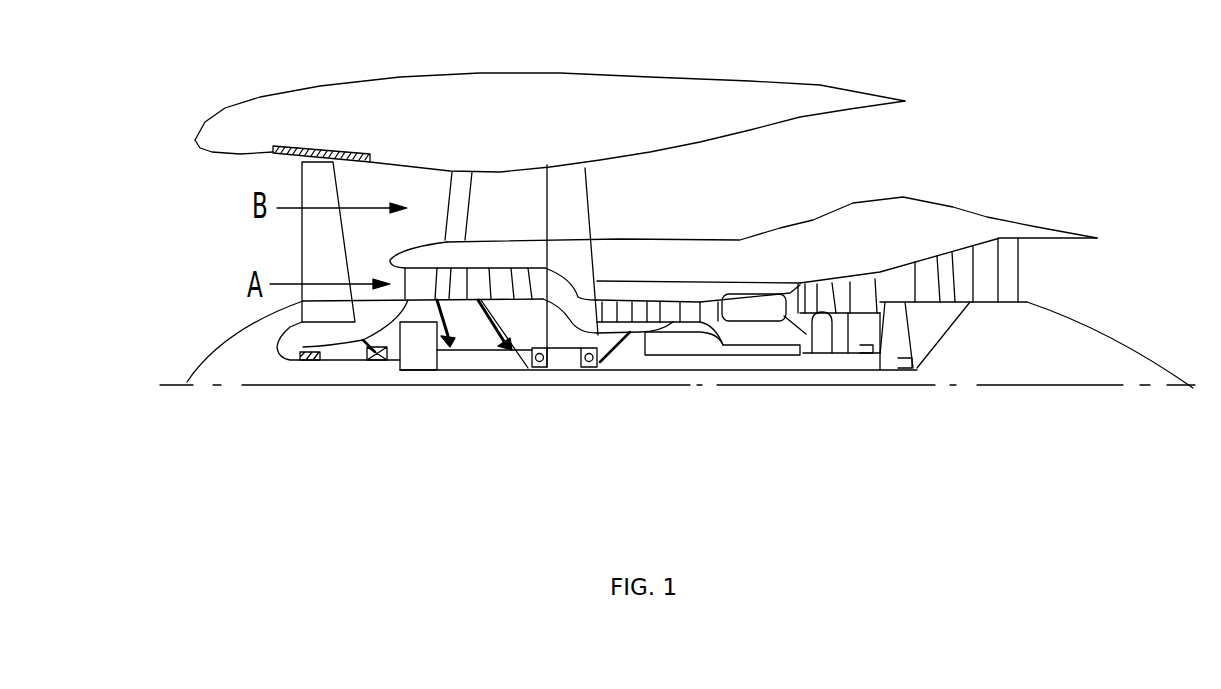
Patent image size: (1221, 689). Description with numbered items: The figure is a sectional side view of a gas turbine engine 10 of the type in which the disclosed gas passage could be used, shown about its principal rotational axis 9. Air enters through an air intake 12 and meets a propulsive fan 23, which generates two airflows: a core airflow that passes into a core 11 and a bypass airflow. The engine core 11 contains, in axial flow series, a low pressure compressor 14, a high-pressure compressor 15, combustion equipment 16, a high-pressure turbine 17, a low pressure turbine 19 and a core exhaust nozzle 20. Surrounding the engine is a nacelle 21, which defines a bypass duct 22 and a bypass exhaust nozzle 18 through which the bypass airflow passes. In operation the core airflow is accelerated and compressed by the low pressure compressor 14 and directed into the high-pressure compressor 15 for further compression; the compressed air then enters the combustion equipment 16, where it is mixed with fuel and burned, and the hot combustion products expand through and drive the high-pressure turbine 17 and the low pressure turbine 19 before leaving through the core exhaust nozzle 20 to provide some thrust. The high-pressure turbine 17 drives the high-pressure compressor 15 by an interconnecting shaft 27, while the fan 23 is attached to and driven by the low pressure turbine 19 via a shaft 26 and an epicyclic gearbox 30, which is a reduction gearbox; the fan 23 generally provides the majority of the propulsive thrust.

The principal rotational axis 9 is at (977, 387).
The gas turbine engine 10 is at (280, 95).
The core 11 is at (737, 252).
The air intake 12 is at (217, 193).
The low pressure compressor 14 is at (497, 268).
The high-pressure compressor 15 is at (668, 282).
The combustion equipment 16 is at (767, 313).
The high-pressure turbine 17 is at (830, 278).
The bypass exhaust nozzle 18 is at (973, 148).
The low pressure turbine 19 is at (987, 260).
The core exhaust nozzle 20 is at (1067, 282).
The nacelle 21 is at (577, 92).
The bypass duct 22 is at (880, 167).
The propulsive fan 23 is at (303, 246).
The shaft 26 is at (663, 370).
The interconnecting shaft 27 is at (713, 355).
The epicyclic gearbox 30 is at (417, 353).